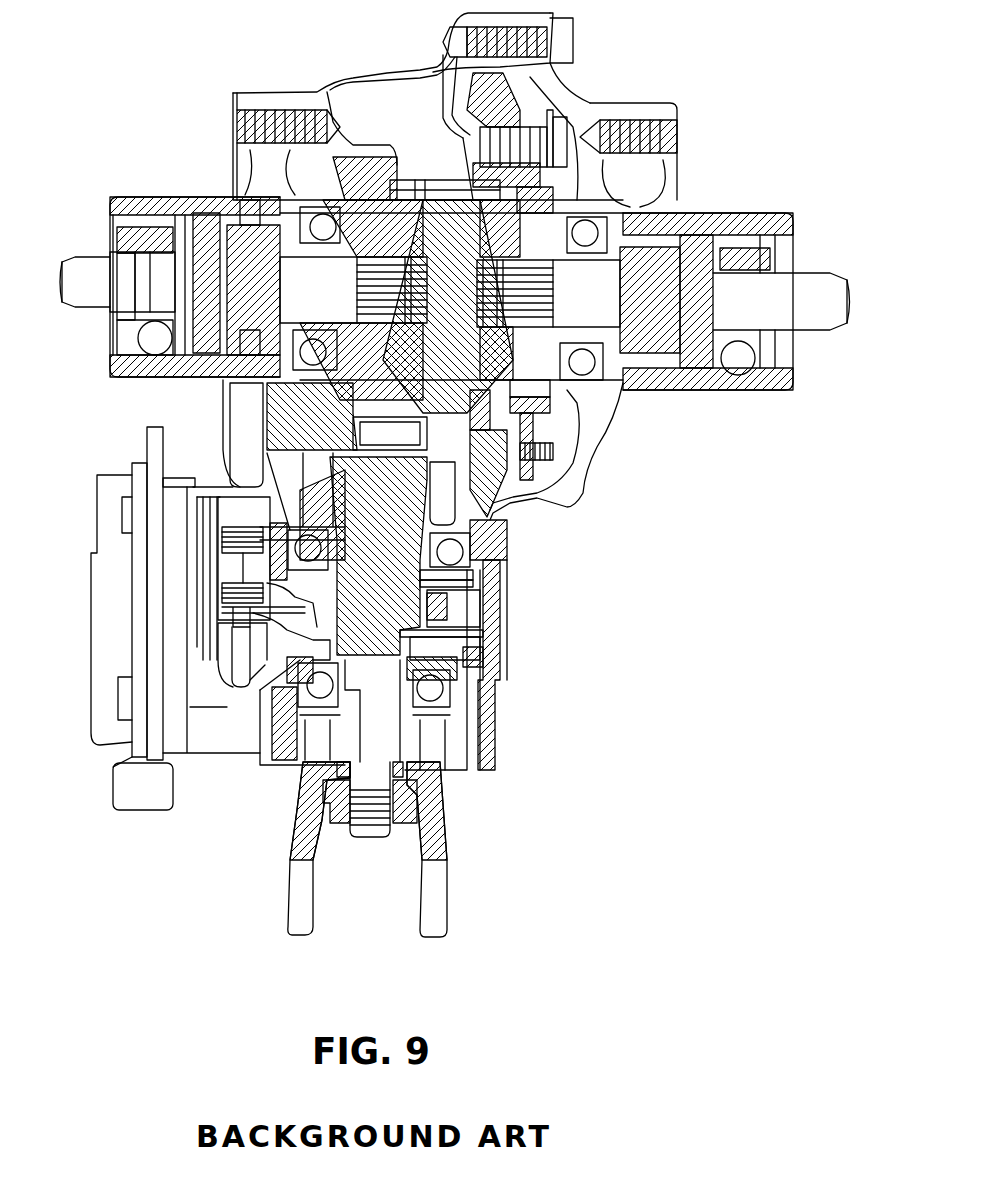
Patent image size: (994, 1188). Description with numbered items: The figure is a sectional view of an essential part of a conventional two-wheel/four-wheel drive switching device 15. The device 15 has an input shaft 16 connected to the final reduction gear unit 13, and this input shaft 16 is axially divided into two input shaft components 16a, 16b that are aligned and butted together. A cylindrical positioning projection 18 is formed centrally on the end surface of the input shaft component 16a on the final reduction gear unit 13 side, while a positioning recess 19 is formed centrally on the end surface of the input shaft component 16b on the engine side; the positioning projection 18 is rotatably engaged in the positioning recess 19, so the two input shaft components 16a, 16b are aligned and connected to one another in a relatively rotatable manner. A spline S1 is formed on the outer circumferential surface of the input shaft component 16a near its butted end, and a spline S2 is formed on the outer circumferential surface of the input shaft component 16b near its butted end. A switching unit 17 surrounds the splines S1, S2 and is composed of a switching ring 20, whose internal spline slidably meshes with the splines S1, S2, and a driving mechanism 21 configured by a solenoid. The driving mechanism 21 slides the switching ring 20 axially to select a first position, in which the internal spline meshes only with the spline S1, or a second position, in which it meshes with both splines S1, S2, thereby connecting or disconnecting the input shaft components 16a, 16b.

The final reduction gear unit 13 is at (593, 490).
The two-wheel/four-wheel drive switching device 15 is at (490, 723).
The input shaft 16 is at (469, 703).
The input shaft component 16a is at (505, 567).
The input shaft component 16b is at (440, 830).
The switching unit 17 is at (458, 610).
The positioning projection 18 is at (490, 692).
The positioning recess 19 is at (340, 655).
The switching ring 20 is at (500, 627).
The driving mechanism 21 is at (240, 570).
The spline S1 is at (475, 660).
The spline S2 is at (260, 687).